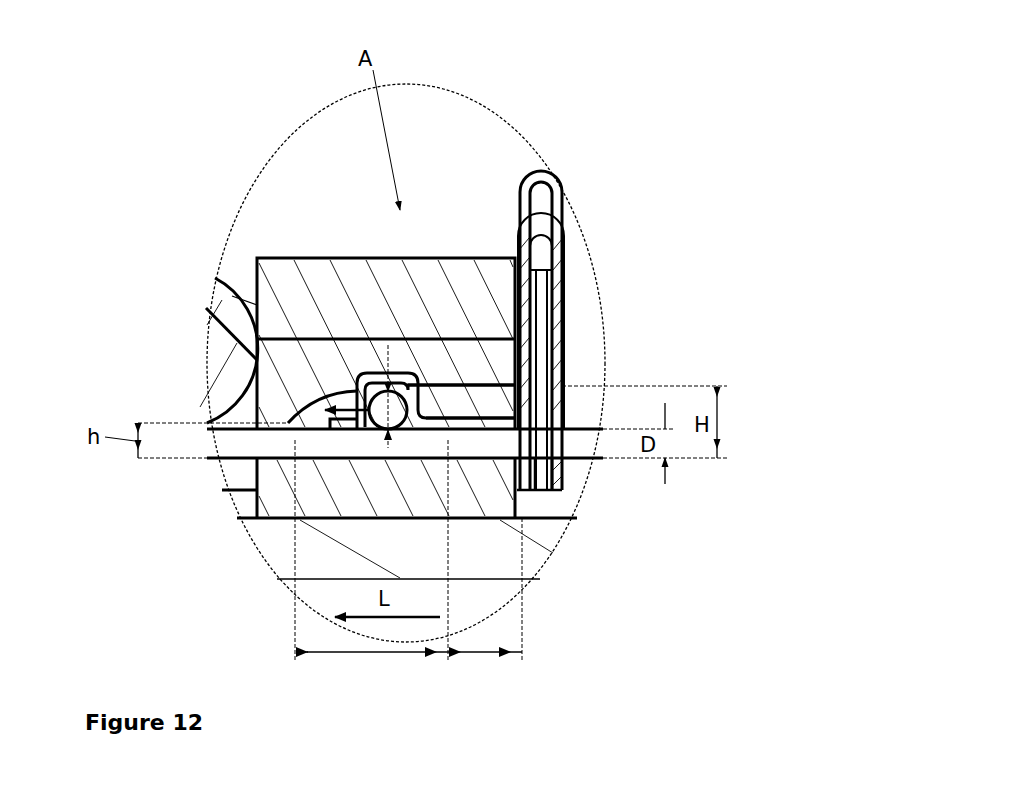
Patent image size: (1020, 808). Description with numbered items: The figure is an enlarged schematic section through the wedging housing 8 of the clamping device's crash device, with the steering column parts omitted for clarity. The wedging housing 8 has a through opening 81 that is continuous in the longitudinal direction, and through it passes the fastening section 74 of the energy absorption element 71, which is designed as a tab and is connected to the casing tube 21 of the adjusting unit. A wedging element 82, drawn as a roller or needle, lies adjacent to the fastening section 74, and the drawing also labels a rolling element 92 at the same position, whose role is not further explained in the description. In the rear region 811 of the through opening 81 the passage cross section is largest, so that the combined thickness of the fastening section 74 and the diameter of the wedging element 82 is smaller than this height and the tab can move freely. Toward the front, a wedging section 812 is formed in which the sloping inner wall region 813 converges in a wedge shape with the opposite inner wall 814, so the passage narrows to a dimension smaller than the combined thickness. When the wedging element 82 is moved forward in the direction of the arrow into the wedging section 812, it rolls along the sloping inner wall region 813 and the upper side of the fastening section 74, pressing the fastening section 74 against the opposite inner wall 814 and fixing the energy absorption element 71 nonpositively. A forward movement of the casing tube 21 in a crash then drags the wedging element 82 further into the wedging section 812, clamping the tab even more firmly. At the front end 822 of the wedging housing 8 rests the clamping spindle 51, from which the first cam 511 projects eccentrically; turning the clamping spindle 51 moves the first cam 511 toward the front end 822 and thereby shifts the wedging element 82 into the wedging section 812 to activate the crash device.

The wedging housing 8 is at (393, 372).
The through opening 81 is at (457, 397).
The rear region of the through opening 811 is at (477, 657).
The wedging section 812 is at (380, 653).
The sloping inner wall region 813 is at (318, 413).
The opposite inner wall 814 is at (335, 416).
The wedging element 82 is at (366, 380).
The front end of the wedging housing 822 is at (253, 304).
The ball 92 is at (415, 385).
The clamping spindle 51 is at (213, 353).
The first cam 511 is at (270, 395).
The fastening section 74 is at (538, 386).
The energy absorption element 71 is at (593, 453).
The casing tube 21 is at (470, 547).